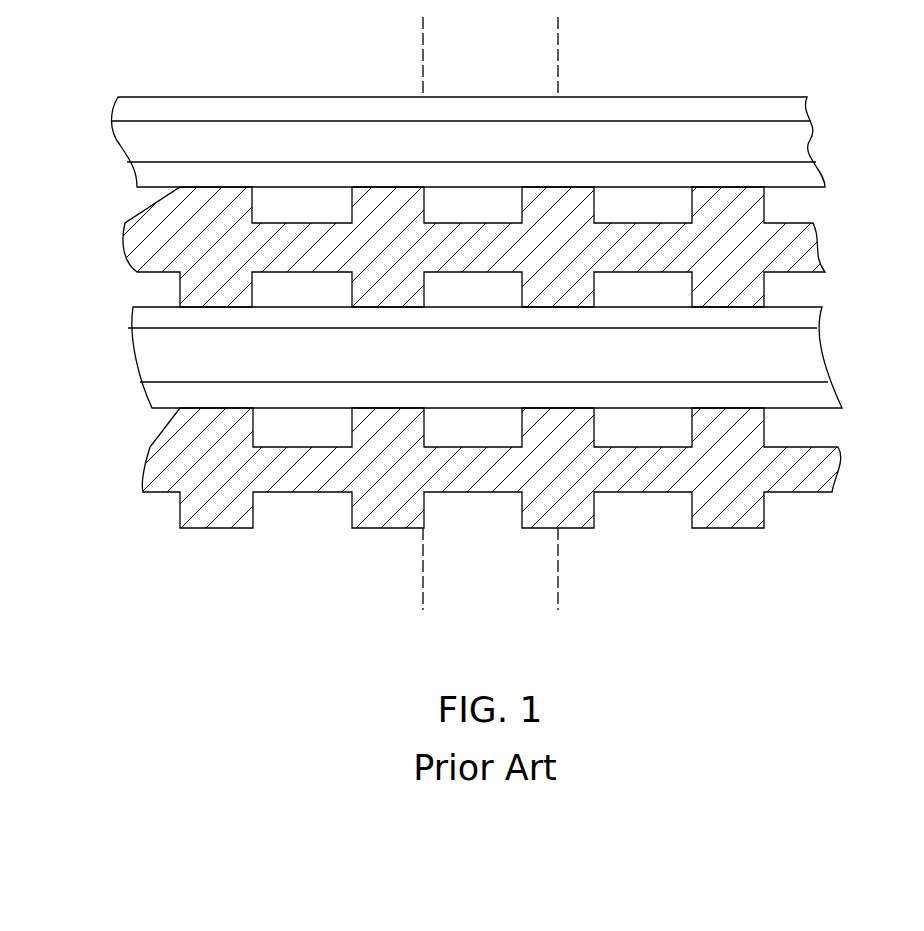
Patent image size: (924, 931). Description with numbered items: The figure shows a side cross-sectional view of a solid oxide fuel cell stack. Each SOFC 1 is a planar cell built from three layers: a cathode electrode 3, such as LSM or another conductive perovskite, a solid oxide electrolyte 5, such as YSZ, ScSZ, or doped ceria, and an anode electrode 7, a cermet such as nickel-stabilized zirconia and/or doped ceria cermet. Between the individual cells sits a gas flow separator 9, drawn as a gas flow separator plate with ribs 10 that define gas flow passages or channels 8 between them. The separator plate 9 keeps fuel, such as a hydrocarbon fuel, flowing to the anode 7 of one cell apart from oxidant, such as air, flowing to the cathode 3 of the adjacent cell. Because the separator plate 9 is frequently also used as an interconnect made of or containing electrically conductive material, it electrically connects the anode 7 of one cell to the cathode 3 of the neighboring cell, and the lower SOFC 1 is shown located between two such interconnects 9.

The solid oxide fuel cell 1 is at (845, 97).
The cathode electrode 3 is at (114, 110).
The solid oxide electrolyte 5 is at (125, 145).
The anode electrode 7 is at (137, 177).
The gas flow passages or channels 8 is at (651, 526).
The gas flow separator 9 is at (845, 203).
The ribs 10 is at (180, 209).